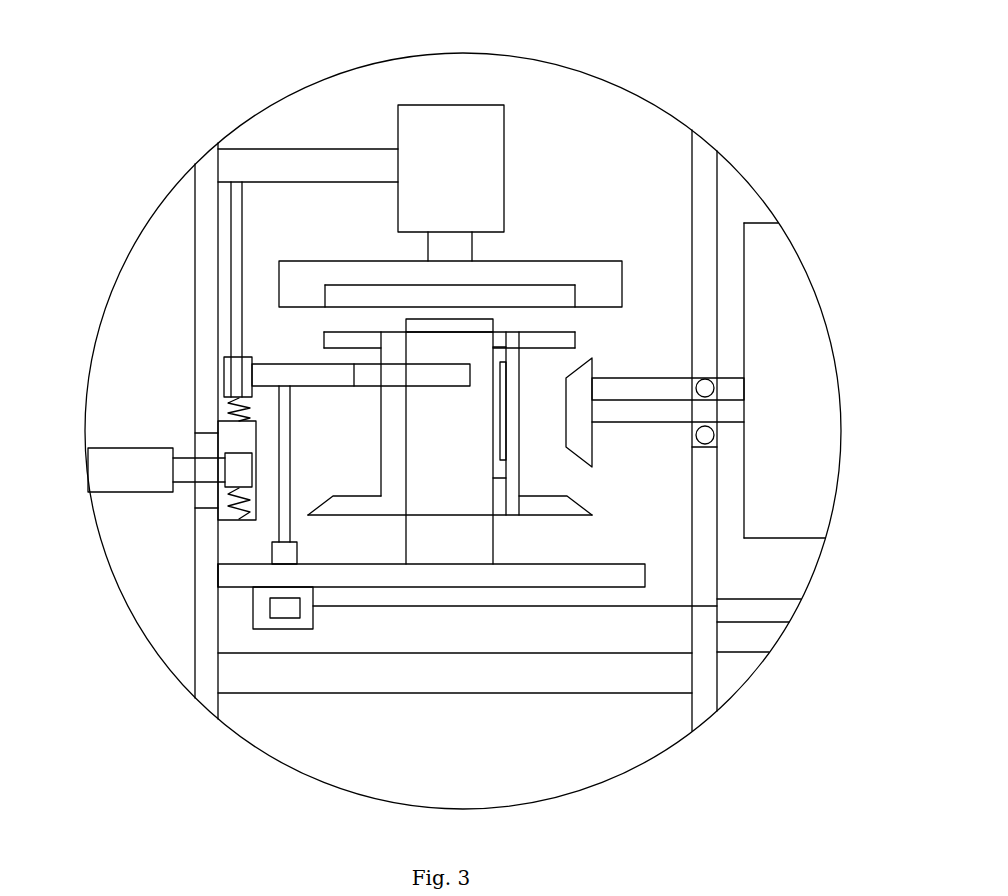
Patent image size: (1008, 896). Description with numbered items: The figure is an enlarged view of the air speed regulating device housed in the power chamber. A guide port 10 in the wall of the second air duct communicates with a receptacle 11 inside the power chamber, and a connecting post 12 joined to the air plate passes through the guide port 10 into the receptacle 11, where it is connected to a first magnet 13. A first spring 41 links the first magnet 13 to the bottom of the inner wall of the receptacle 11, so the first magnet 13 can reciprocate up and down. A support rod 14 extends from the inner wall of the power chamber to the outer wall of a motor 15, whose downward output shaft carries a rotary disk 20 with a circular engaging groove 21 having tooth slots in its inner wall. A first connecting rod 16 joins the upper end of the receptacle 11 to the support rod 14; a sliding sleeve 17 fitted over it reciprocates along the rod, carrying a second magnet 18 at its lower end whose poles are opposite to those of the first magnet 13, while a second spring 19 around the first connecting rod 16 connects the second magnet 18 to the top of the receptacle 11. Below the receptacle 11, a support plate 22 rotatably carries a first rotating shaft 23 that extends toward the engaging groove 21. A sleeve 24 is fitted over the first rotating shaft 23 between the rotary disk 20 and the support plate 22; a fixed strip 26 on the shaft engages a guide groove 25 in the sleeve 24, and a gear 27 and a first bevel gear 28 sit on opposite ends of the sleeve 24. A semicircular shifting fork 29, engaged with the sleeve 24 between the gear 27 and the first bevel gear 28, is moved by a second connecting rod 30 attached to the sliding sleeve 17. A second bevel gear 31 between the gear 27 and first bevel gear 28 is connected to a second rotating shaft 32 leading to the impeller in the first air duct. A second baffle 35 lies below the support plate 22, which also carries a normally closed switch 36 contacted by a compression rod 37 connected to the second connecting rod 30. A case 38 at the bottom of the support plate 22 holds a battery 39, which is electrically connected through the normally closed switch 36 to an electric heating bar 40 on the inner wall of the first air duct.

The guide port 10 is at (205, 443).
The receptacle 11 is at (280, 520).
The connecting post 12 is at (225, 483).
The first magnet 13 is at (230, 455).
The support rod 14 is at (340, 150).
The motor 15 is at (447, 105).
The first connecting rod 16 is at (232, 275).
The sliding sleeve 17 is at (230, 357).
The second magnet 18 is at (228, 400).
The second spring 19 is at (230, 413).
The rotary disk 20 is at (594, 261).
The engaging groove 21 is at (523, 285).
The support plate 22 is at (433, 588).
The first rotating shaft 23 is at (493, 541).
The sleeve 24 is at (519, 463).
The guide groove 25 is at (507, 356).
The fixed strip 26 is at (507, 428).
The gear 27 is at (577, 338).
The first bevel gear 28 is at (575, 500).
The semicircular shifting fork 29 is at (432, 386).
The second connecting rod 30 is at (328, 385).
The second bevel gear 31 is at (593, 378).
The second rotating shaft 32 is at (695, 400).
The second baffle 35 is at (538, 675).
The normally closed switch 36 is at (285, 553).
The compression rod 37 is at (283, 543).
The case 38 is at (290, 628).
The battery 39 is at (295, 618).
The electric heating bar 40 is at (752, 627).
The first spring 41 is at (250, 503).